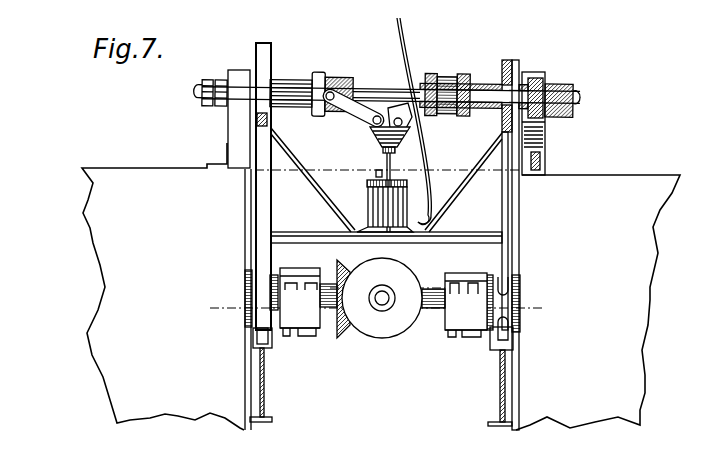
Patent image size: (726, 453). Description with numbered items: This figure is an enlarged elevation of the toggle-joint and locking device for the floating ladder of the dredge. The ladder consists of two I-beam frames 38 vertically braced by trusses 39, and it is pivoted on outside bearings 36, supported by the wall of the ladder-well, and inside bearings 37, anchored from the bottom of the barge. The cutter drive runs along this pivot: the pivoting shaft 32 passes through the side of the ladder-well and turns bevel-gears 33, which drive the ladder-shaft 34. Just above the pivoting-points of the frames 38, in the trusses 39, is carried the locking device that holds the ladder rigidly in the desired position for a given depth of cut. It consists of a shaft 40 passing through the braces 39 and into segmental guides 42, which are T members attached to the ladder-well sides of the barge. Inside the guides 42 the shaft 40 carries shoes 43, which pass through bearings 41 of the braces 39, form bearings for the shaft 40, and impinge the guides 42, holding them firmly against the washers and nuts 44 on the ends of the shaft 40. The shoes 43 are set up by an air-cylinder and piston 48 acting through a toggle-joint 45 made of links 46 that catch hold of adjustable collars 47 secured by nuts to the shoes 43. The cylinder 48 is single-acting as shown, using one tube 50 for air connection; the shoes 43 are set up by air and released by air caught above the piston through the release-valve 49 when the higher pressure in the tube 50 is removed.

The pivoting shaft 32 is at (433, 291).
The bevel-gears 33 is at (350, 308).
The ladder-shaft 34 is at (384, 297).
The outside bearings 36 is at (383, 302).
The inside bearings 37 is at (245, 292).
The I-beam frames 38 is at (265, 378).
The trusses 39 is at (271, 210).
The shaft 40 is at (377, 90).
The bearings 41 is at (517, 66).
The segmental guides 42 is at (228, 127).
The shoes 43 is at (281, 82).
The washers and nuts 44 is at (208, 82).
The toggle-joint 45 is at (375, 135).
The links 46 is at (352, 117).
The adjustable collars 47 is at (333, 80).
The air-cylinder and piston 48 is at (372, 200).
The release-valve 49 is at (376, 172).
The tube 50 is at (428, 165).